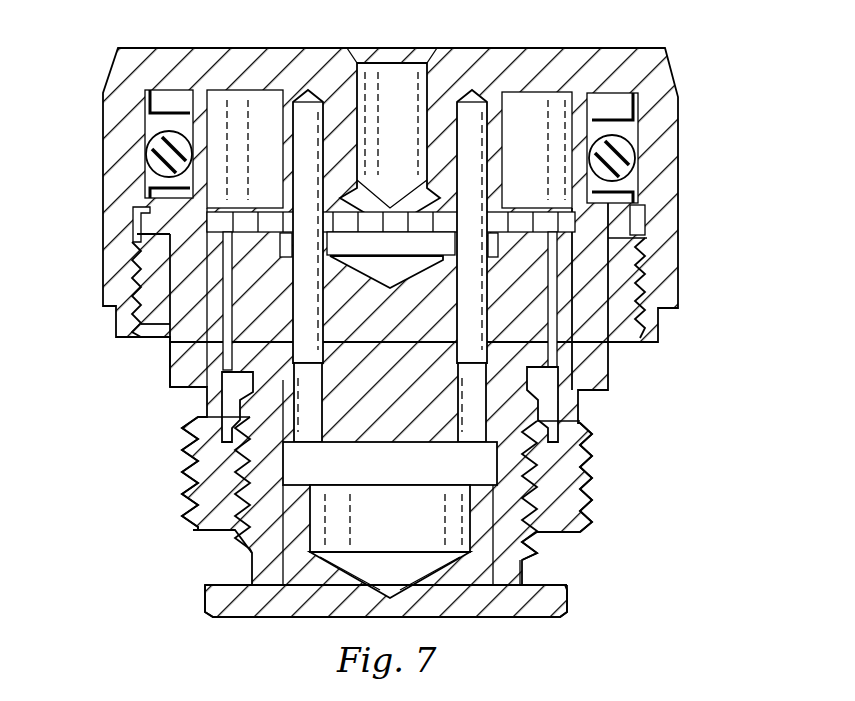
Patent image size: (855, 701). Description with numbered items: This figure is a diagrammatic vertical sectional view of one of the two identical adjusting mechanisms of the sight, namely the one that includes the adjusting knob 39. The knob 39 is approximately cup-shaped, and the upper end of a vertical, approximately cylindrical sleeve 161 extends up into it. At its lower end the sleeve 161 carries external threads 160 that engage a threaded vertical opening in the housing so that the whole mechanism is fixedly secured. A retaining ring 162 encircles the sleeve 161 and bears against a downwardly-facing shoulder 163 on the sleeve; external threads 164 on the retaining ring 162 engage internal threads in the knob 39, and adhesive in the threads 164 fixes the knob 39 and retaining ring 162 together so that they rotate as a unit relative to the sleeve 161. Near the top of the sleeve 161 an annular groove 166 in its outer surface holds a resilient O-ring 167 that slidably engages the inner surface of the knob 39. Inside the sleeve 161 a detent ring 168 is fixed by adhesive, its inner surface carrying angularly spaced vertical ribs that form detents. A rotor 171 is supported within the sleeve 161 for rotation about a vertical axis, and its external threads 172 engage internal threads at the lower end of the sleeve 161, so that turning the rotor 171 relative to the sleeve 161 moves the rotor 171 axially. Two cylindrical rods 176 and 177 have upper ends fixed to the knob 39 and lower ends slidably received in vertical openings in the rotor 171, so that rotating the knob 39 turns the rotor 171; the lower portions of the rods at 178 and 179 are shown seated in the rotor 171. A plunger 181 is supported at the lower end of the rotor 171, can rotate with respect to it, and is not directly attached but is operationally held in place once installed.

The adjusting knob 39 is at (680, 124).
The external threads 160 is at (593, 494).
The sleeve 161 is at (198, 524).
The retaining ring 162 is at (626, 310).
The downwardly-facing shoulder 163 is at (137, 245).
The threads 164 is at (642, 277).
The annular groove 166 is at (150, 136).
The O-ring 167 is at (630, 162).
The detent ring 168 is at (213, 324).
The rotor 171 is at (395, 432).
The threads 172 is at (222, 469).
The cylindrical rod 176 is at (303, 138).
The cylindrical rod 177 is at (482, 121).
The left pin lower end 178 is at (303, 427).
The right pin lower end 179 is at (485, 427).
The plunger 181 is at (534, 619).